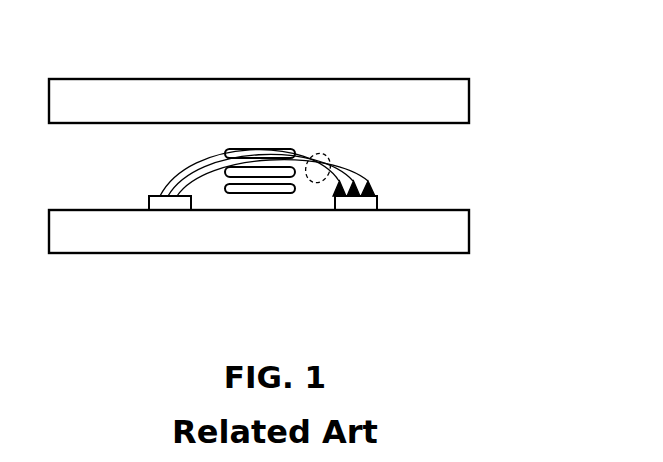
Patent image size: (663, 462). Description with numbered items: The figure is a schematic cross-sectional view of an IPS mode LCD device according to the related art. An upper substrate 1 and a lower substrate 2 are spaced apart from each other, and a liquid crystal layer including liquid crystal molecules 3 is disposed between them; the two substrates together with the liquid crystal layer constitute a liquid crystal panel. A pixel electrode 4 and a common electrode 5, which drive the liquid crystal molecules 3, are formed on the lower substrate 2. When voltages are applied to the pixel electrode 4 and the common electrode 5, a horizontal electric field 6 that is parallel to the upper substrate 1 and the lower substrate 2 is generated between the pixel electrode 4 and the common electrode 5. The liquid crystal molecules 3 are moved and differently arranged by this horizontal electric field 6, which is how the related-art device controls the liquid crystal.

The upper substrate 1 is at (463, 103).
The lower substrate 2 is at (463, 233).
The liquid crystal molecules 3 is at (263, 190).
The pixel electrode 4 is at (172, 202).
The common electrode 5 is at (355, 202).
The horizontal electric field 6 is at (330, 155).